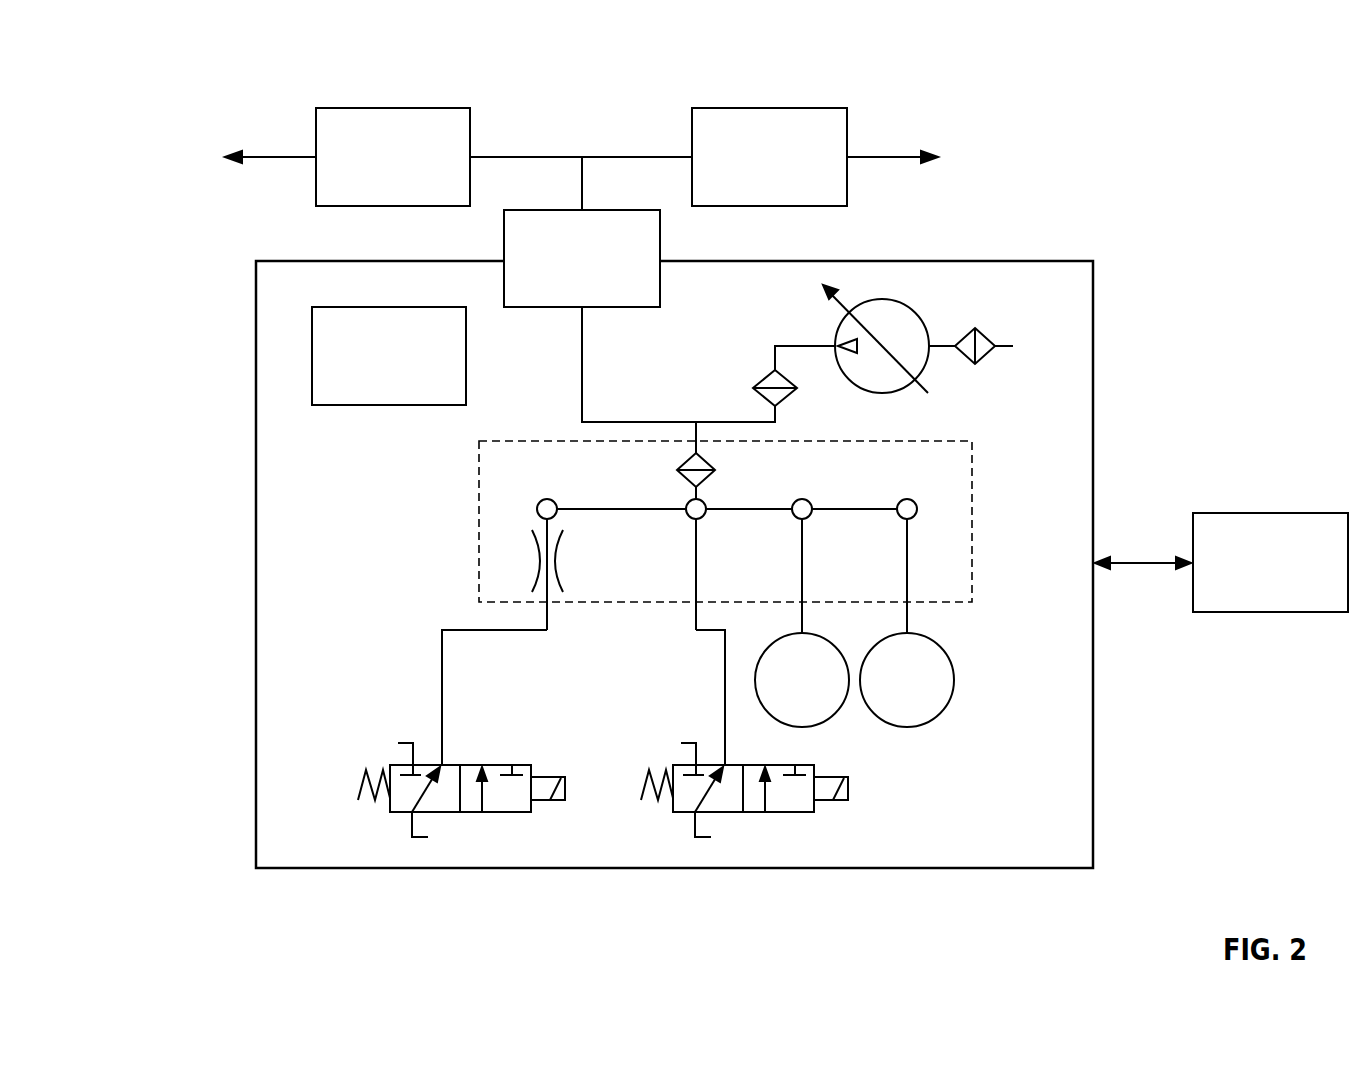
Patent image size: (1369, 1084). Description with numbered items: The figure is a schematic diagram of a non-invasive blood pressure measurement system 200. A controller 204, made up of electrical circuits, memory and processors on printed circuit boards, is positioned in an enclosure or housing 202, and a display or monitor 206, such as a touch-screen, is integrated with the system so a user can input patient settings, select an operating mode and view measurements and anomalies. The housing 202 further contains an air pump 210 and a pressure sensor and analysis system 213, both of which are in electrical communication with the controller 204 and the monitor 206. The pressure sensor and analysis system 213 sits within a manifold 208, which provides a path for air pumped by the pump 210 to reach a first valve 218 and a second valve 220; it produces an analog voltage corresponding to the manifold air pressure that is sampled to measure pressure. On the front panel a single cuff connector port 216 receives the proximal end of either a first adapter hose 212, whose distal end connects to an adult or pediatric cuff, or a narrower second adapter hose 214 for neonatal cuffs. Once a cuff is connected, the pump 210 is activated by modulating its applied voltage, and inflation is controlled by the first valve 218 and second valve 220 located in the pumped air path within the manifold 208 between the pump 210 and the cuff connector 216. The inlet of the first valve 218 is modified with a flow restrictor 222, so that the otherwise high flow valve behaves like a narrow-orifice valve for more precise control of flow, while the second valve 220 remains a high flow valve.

The NIBP device or system 200 is at (148, 76).
The enclosure or housing 202 is at (254, 495).
The controller 204 is at (384, 307).
The display or monitor 206 is at (1263, 513).
The manifold 208 is at (477, 510).
The air pump 210 is at (837, 328).
The first adapter hose 212 is at (387, 108).
The pressure sensor and analysis system 213 is at (970, 719).
The second adapter hose 214 is at (765, 108).
The cuff connector port 216 is at (578, 210).
The first valve 218 is at (400, 812).
The second valve 220 is at (685, 812).
The flow restrictor 222 is at (600, 600).